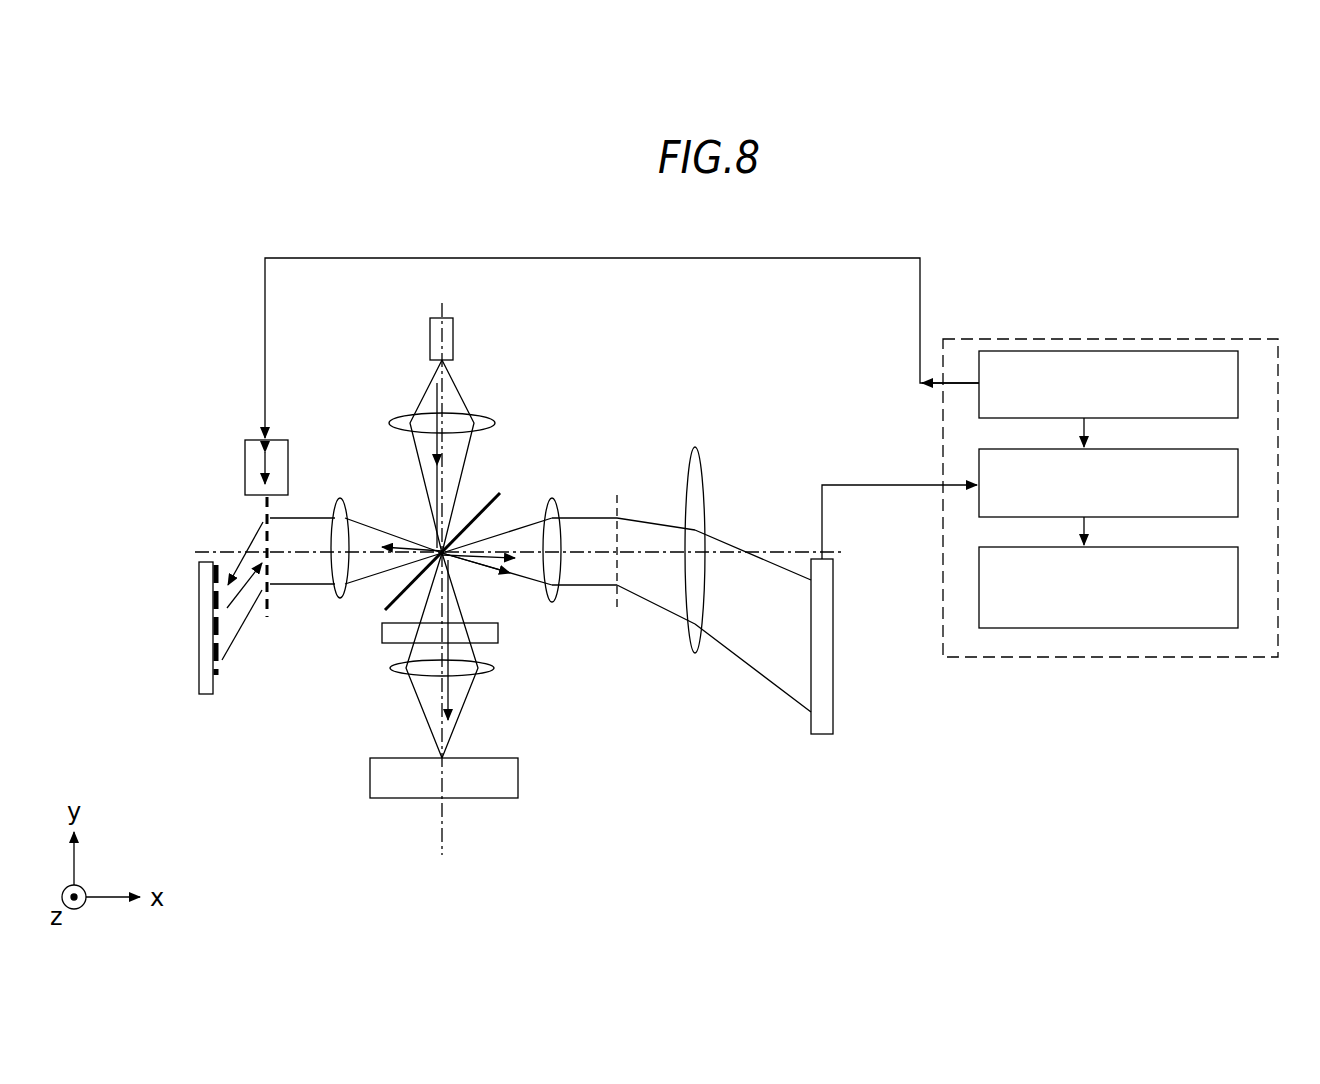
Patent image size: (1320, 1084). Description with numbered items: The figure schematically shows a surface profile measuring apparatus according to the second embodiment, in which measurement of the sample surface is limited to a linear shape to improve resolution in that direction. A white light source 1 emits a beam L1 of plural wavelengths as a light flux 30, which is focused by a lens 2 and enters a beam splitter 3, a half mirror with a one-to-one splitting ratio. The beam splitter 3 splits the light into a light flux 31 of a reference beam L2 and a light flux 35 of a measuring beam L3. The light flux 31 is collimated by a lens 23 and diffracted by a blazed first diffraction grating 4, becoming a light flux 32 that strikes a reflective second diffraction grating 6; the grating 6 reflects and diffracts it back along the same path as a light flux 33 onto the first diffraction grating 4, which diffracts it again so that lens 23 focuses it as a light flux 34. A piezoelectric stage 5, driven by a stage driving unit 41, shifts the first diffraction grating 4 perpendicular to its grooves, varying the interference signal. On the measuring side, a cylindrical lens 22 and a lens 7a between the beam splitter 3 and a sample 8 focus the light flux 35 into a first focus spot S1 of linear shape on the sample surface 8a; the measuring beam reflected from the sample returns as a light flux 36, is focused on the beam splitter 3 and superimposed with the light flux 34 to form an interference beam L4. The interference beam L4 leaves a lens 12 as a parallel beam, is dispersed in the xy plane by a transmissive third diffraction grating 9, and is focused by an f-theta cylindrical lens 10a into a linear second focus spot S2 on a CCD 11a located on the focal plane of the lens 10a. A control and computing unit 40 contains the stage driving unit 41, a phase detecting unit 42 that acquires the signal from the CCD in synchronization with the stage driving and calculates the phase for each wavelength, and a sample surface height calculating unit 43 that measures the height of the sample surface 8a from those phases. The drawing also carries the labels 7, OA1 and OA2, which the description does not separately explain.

The light source 1 is at (455, 335).
The lens 2 is at (493, 423).
The beam splitter 3 is at (505, 492).
The first diffraction grating 4 is at (260, 528).
The piezoelectric stage 5 is at (247, 453).
The second diffraction grating 6 is at (199, 640).
The objective lens 7 is at (437, 678).
The lens 7a is at (410, 673).
The sample 8 is at (520, 772).
The sample surface 8a is at (472, 758).
The third diffraction grating 9 is at (618, 500).
The cylindrical lens 10a is at (700, 447).
The CCD 11a is at (820, 736).
The lens 12 is at (557, 600).
The cylindrical lens 22 is at (382, 634).
The lens 23 is at (340, 500).
The light flux 30 is at (432, 402).
The light flux 31 is at (405, 538).
The light flux 32 is at (240, 553).
The light flux 33 is at (230, 607).
The light flux 34 is at (500, 548).
The light flux 35 is at (450, 683).
The light flux 36 is at (465, 568).
The control and computing unit 40 is at (1033, 338).
The stage driving unit 41 is at (1240, 382).
The phase detecting unit 42 is at (1240, 482).
The sample surface height calculating unit 43 is at (1240, 577).
The beam L1 is at (460, 390).
The reference beam L2 is at (302, 587).
The measuring beam L3 is at (447, 743).
The interference beam L4 is at (528, 578).
The first focus spot S1 is at (440, 758).
The second focus spot S2 is at (800, 688).
The optical axis 1 OA1 is at (838, 550).
The optical axis 2 OA2 is at (443, 823).